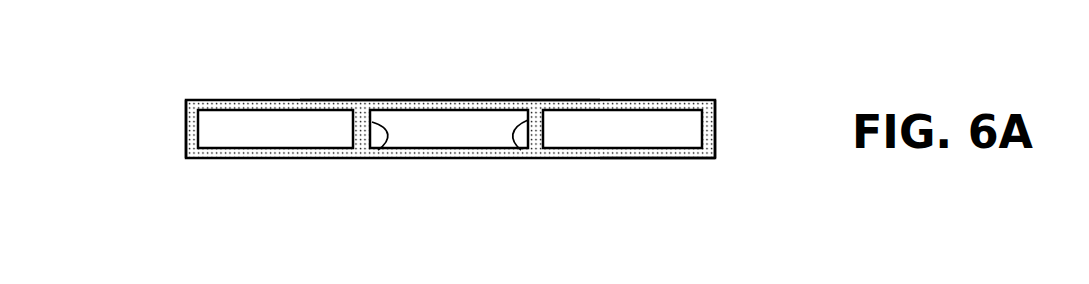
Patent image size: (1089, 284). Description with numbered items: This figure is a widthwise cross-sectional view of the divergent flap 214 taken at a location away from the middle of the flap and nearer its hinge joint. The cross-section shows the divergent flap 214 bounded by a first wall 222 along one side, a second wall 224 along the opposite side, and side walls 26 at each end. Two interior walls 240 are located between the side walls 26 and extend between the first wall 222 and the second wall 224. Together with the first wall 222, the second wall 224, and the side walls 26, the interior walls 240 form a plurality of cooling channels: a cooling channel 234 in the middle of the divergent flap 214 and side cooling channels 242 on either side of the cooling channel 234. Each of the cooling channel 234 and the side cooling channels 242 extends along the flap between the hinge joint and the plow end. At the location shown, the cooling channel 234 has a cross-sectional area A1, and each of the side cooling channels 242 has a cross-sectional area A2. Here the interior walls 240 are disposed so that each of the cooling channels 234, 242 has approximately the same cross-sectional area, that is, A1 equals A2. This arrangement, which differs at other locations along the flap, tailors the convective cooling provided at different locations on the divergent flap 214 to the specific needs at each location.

The divergent flap 214 is at (193, 84).
The first wall 222 is at (577, 99).
The second wall 224 is at (690, 160).
The side walls 26 is at (186, 132).
The side cooling channels 242 is at (262, 112).
The cooling channel 234 is at (443, 115).
The interior walls 240 is at (378, 150).
The cross-sectional area of side cooling channels A2 is at (262, 133).
The cross-sectional area of cooling channel A1 is at (443, 132).